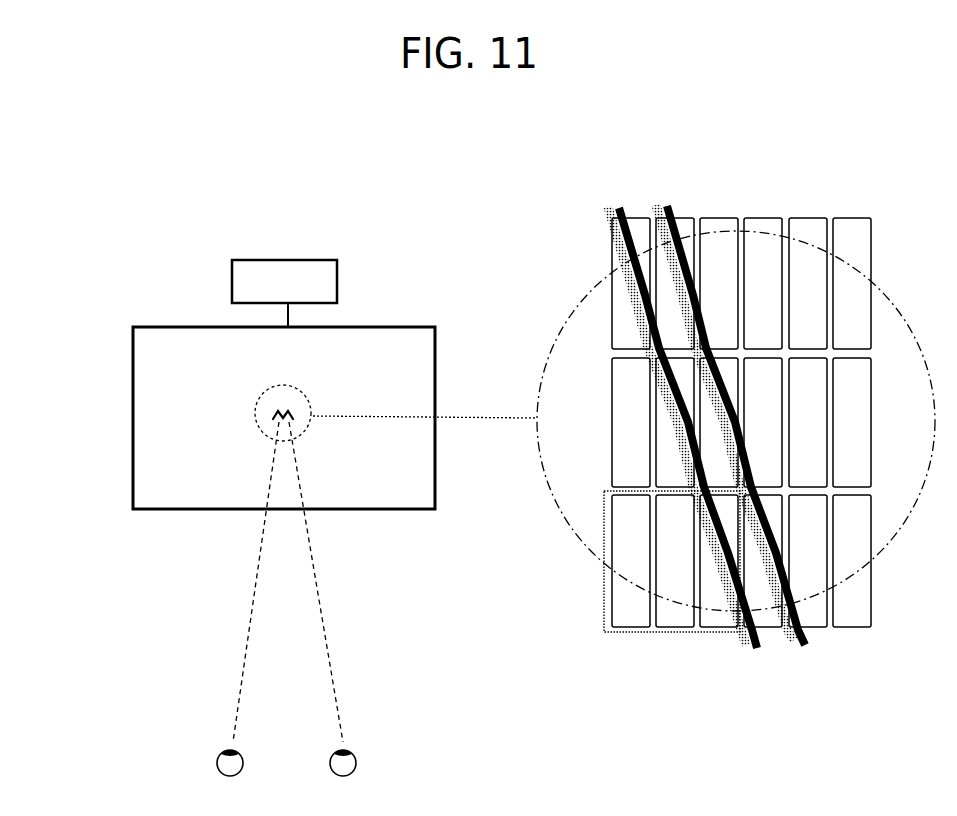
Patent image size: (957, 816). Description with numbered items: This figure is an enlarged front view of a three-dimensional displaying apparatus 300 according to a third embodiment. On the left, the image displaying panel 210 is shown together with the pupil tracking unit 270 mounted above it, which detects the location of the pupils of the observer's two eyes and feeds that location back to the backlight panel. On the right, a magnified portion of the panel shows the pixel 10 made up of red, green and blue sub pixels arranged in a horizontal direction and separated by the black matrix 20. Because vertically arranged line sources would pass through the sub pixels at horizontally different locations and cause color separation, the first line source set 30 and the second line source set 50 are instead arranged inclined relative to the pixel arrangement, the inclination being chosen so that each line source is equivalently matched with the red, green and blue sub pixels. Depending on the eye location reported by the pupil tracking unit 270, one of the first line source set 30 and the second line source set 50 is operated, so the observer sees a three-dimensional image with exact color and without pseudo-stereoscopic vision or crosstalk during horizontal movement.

The pixel 10 is at (603, 573).
The black matrix 20 is at (616, 351).
The first line source set 30 is at (792, 643).
The second line source set 50 is at (763, 643).
The image displaying panel 210 is at (133, 488).
The pupil tracking unit 270 is at (232, 283).
The 3-dimensional displaying apparatus 300 is at (58, 799).